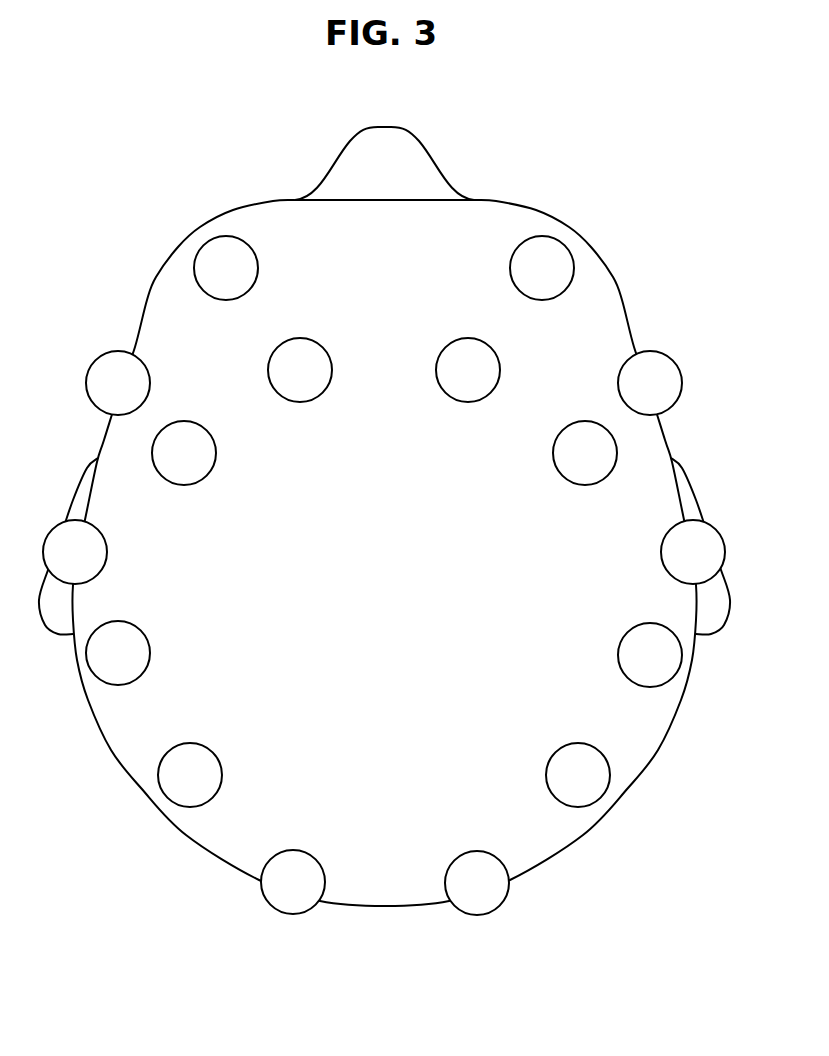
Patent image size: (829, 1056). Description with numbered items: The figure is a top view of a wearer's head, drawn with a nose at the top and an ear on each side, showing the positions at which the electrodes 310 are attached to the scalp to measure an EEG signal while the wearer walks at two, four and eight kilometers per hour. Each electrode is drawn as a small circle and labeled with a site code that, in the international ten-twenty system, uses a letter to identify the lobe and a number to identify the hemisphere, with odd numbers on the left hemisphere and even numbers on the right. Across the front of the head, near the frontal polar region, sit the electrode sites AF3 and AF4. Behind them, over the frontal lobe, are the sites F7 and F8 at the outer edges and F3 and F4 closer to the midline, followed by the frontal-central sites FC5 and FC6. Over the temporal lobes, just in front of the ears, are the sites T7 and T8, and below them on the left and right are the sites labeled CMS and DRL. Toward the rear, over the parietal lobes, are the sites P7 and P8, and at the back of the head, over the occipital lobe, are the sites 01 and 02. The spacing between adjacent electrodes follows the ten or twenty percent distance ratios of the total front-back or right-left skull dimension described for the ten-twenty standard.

The electrodes 310 is at (207, 260).
The AF3 electrode AF3 is at (246, 267).
The AF4 electrode AF4 is at (519, 267).
The F7 electrode F7 is at (118, 368).
The F8 electrode F8 is at (650, 368).
The F3 electrode F3 is at (318, 370).
The F4 electrode F4 is at (483, 370).
The FC5 electrode FC5 is at (208, 453).
The FC6 electrode FC6 is at (561, 453).
The T7 electrode T7 is at (91, 552).
The T8 electrode T8 is at (677, 552).
The CMS reference electrode CMS is at (137, 645).
The DRL reference electrode DRL is at (628, 646).
The P7 electrode P7 is at (201, 764).
The P8 electrode P8 is at (571, 760).
The O1 electrode 01 is at (293, 866).
The O2 electrode 02 is at (477, 867).